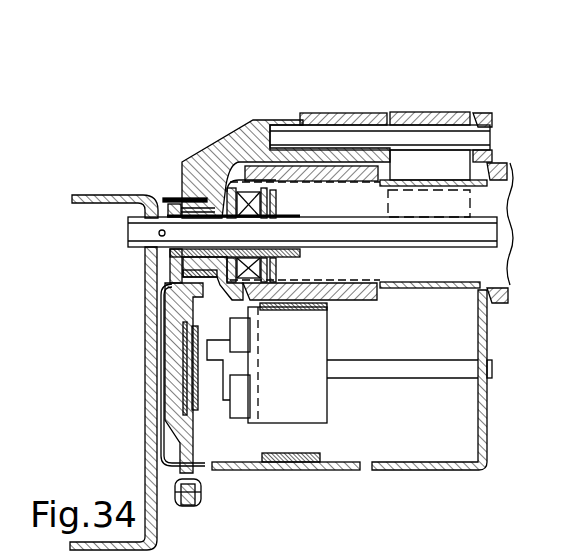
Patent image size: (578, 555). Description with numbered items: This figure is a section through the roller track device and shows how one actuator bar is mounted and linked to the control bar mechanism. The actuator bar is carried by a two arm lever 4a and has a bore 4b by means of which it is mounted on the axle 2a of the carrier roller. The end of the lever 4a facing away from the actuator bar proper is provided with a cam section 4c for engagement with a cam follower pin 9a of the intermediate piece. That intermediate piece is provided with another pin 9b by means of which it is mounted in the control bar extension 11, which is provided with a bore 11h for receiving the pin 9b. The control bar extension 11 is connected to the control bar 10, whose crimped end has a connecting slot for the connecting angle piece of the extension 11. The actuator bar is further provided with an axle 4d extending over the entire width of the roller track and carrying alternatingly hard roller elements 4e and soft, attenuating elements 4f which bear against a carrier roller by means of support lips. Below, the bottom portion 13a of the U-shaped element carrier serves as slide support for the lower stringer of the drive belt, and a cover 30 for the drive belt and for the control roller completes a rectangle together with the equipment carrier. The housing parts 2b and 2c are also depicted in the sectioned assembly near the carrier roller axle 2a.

The axle 2a is at (498, 244).
The housing part 2b is at (380, 181).
The housing flange 2c is at (300, 181).
The two arm lever 4a is at (207, 165).
The bore 4b is at (162, 200).
The cam section 4c is at (160, 305).
The axle 4d is at (480, 140).
The hard roller elements 4e is at (312, 117).
The soft attenuating elements 4f is at (442, 116).
The cam follower pin 9a is at (148, 342).
The pin 9b is at (147, 400).
The control bar 10 is at (197, 403).
The control bar extension 11 is at (198, 415).
The bore 11h is at (145, 428).
The bottom portion 13a is at (335, 470).
The cover 30 is at (483, 425).